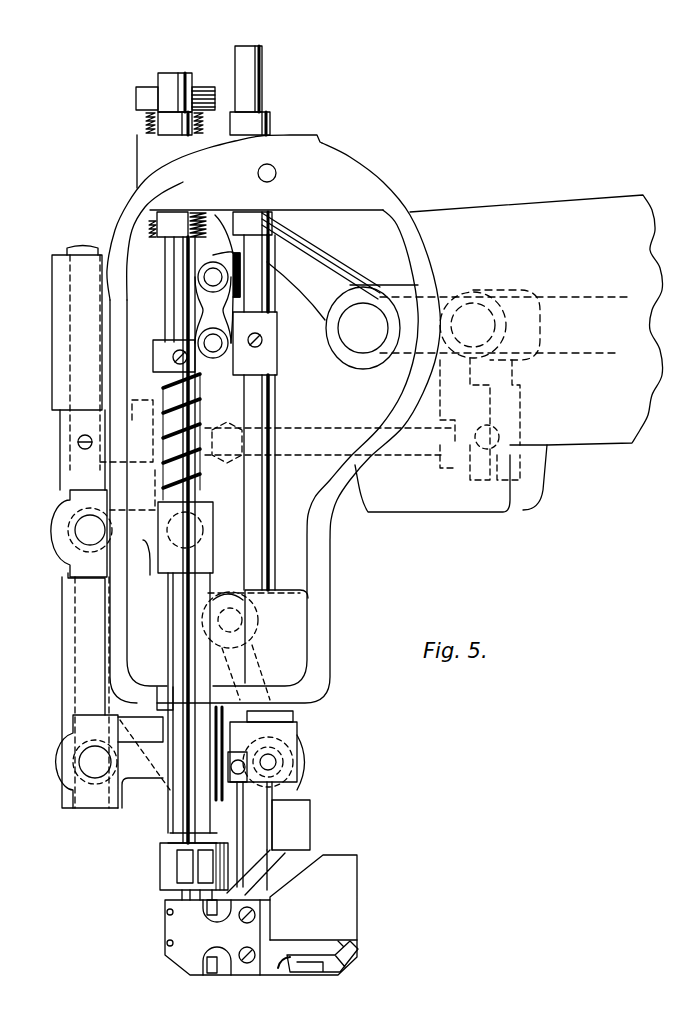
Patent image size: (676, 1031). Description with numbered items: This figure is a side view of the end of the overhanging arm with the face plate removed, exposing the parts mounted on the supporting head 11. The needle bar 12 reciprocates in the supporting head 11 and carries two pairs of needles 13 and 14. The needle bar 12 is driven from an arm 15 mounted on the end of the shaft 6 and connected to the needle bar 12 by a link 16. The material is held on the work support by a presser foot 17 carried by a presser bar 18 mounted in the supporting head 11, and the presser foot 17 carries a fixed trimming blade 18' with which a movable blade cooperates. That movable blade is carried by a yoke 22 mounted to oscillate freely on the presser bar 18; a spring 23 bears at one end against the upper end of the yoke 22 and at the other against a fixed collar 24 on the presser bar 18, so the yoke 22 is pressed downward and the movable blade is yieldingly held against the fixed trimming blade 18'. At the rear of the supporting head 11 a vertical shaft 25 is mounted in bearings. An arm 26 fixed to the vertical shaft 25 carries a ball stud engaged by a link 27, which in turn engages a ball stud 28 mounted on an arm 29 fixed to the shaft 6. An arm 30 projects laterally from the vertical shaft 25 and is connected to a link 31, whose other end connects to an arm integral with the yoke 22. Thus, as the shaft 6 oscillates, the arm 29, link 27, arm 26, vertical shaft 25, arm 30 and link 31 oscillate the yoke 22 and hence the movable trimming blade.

The shaft 6 is at (440, 305).
The supporting head 11 is at (323, 522).
The needle bar 12 is at (258, 421).
The needles 13 is at (250, 823).
The needles 14 is at (243, 838).
The arm 15 is at (323, 280).
The link 16 is at (220, 313).
The presser foot 17 is at (203, 940).
The presser bar 18 is at (157, 277).
The fixed trimming blade 18' is at (318, 978).
The yoke 22 is at (173, 780).
The spring 23 is at (196, 414).
The fixed collar 24 is at (163, 357).
The vertical shaft 25 is at (70, 250).
The arm 26 is at (137, 443).
The link 27 is at (326, 436).
The ball stud 28 is at (487, 437).
The arm 29 is at (497, 375).
The arm 30 is at (85, 535).
The link 31 is at (146, 535).